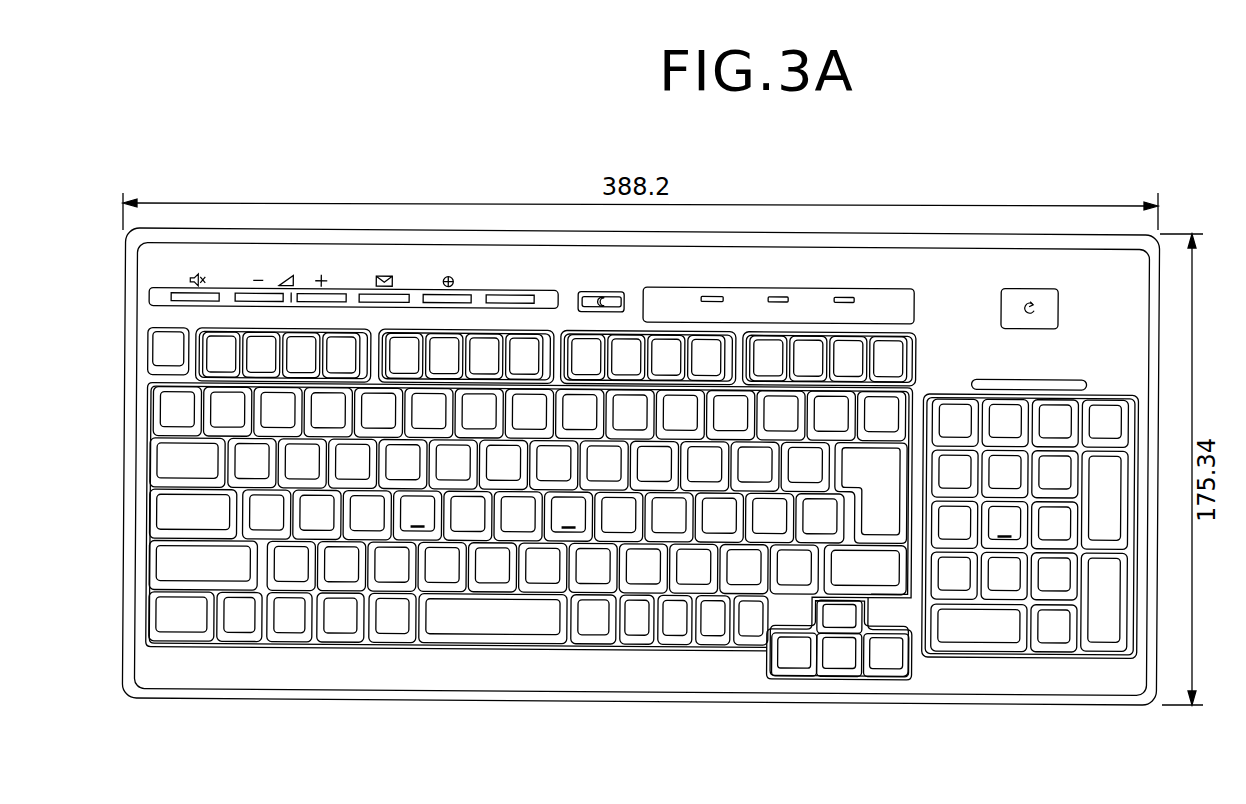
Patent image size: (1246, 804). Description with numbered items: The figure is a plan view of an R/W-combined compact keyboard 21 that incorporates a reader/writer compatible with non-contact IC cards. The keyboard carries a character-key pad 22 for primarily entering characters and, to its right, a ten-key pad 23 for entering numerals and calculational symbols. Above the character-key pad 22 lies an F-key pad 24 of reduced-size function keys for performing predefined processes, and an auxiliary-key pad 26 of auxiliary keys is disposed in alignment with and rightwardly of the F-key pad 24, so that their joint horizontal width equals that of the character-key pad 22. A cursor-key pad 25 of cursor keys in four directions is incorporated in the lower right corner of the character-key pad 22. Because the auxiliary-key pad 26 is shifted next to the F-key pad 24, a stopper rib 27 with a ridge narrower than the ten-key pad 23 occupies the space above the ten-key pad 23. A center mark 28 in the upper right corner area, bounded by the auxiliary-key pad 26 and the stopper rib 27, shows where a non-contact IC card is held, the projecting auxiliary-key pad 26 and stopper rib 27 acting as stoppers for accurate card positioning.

The R/W-combined compact keyboard 21 is at (469, 706).
The character-key pad 22 is at (187, 648).
The ten-key pad 23 is at (1040, 655).
The F-key pad 24 is at (568, 333).
The cursor-key pad 25 is at (848, 678).
The auxiliary-key pad 26 is at (915, 357).
The stopper rib 27 is at (1070, 377).
The center mark 28 is at (1027, 286).